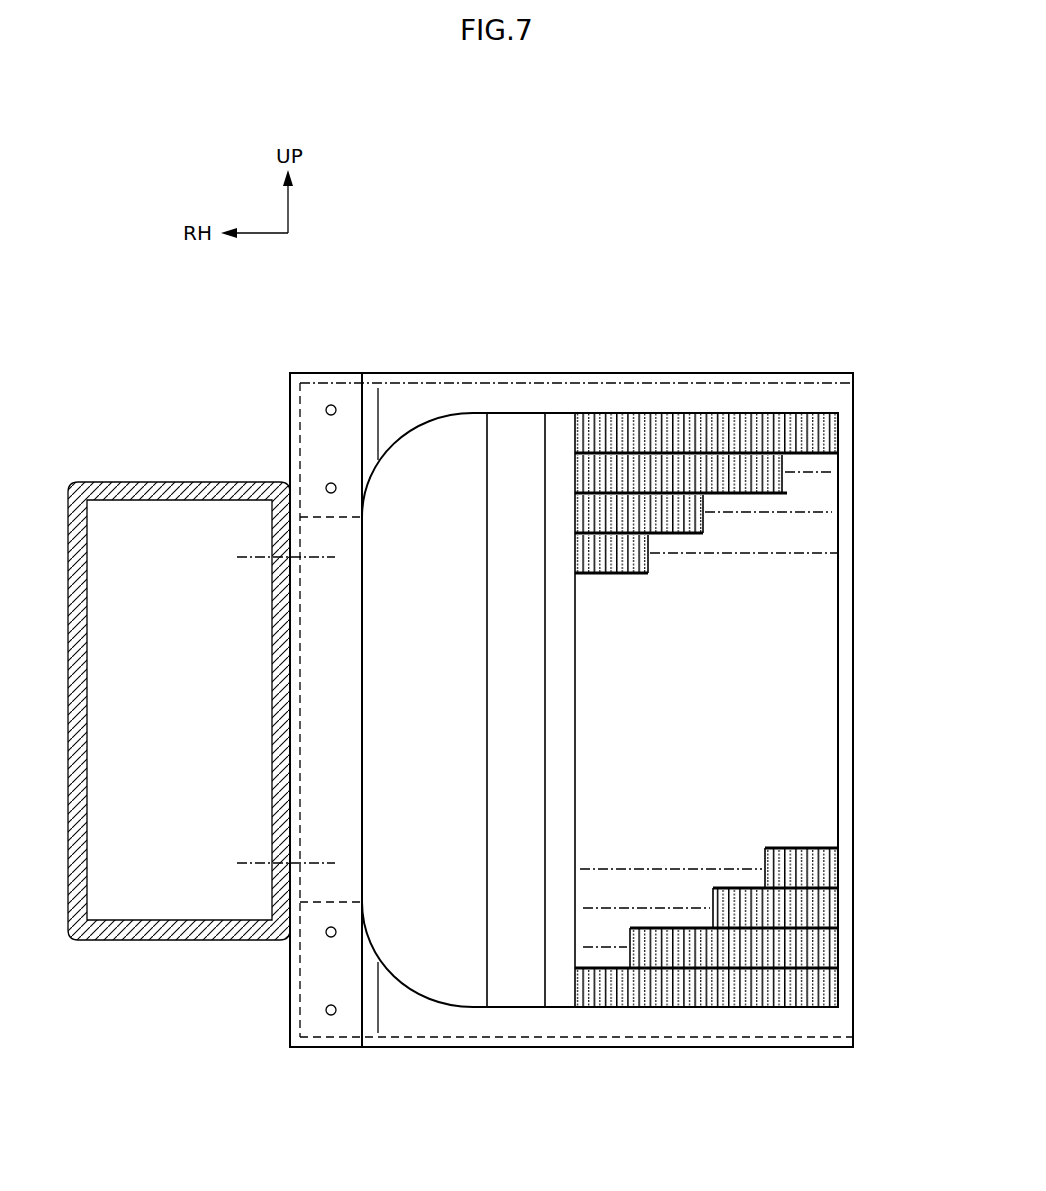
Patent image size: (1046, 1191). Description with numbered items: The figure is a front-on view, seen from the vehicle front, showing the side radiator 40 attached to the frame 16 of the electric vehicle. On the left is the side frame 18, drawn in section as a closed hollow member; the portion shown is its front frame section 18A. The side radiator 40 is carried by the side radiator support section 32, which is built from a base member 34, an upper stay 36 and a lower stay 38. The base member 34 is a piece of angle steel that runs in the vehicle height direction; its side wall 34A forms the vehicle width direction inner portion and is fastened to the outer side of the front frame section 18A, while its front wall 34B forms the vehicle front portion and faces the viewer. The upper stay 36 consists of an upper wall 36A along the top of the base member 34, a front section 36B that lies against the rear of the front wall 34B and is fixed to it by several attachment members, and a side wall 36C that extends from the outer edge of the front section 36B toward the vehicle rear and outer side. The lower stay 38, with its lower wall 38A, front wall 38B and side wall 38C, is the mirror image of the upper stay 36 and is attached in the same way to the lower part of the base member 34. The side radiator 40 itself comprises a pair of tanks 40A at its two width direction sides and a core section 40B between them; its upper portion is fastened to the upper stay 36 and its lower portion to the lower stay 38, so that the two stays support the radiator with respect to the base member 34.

The frame 16 is at (178, 978).
The side frame 18 is at (201, 651).
The front frame section 18A is at (150, 482).
The side radiator support section 32 is at (707, 306).
The base member 34 is at (310, 372).
The side wall 34A is at (290, 411).
The front wall 34B is at (350, 390).
The upper stay 36 is at (800, 372).
The upper wall 36A is at (580, 372).
The front section 36B is at (368, 447).
The side wall 36C is at (830, 398).
The lower stay 38 is at (665, 1048).
The lower wall 38A is at (557, 1047).
The front wall 38B is at (371, 1025).
The side wall 38C is at (833, 1020).
The side radiator 40 is at (858, 704).
The tank 40A is at (842, 533).
The core section 40B is at (813, 747).